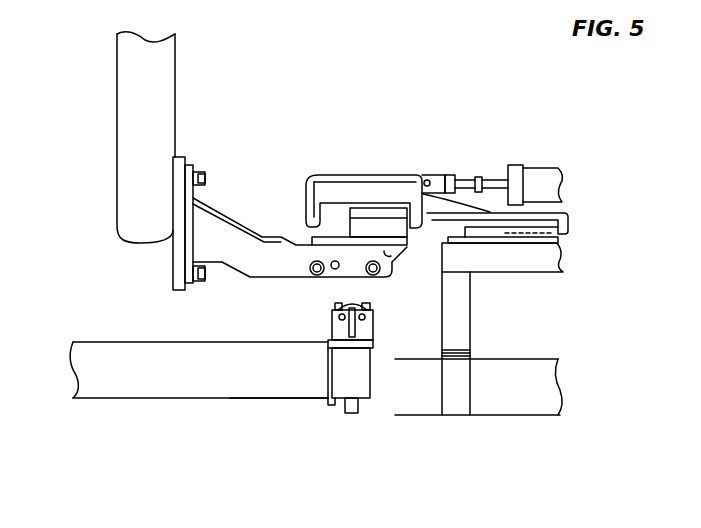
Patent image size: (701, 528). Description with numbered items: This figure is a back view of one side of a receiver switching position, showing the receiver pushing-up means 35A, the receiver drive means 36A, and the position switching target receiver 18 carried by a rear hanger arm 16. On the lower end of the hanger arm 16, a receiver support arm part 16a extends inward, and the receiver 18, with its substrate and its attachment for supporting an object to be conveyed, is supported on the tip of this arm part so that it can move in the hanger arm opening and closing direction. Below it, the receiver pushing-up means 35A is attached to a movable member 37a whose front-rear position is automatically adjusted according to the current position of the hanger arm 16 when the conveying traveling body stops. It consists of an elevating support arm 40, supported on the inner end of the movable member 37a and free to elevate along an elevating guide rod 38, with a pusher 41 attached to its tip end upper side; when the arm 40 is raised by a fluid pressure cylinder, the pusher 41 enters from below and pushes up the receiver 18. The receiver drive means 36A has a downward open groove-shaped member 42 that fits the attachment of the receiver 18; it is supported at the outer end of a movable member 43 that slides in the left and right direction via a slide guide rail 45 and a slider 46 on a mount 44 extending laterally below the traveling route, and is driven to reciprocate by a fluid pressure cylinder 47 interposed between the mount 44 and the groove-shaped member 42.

The rear hanger arm 16 is at (133, 104).
The receiver support arm part 16a is at (230, 235).
The position switching target receiver 18 is at (367, 215).
The receiver drive means 36A is at (408, 172).
The groove-shaped member 42 is at (338, 190).
The slide guide rail 45 is at (493, 226).
The fluid pressure cylinder 47 is at (540, 177).
The movable member 43 is at (540, 213).
The slider 46 is at (567, 225).
The mount 44 is at (537, 260).
The pusher 41 is at (350, 304).
The elevating support arm 40 is at (365, 332).
The elevating guide rod 38 is at (353, 415).
The movable member 37a is at (145, 382).
The receiver pushing-up means 35A is at (300, 407).